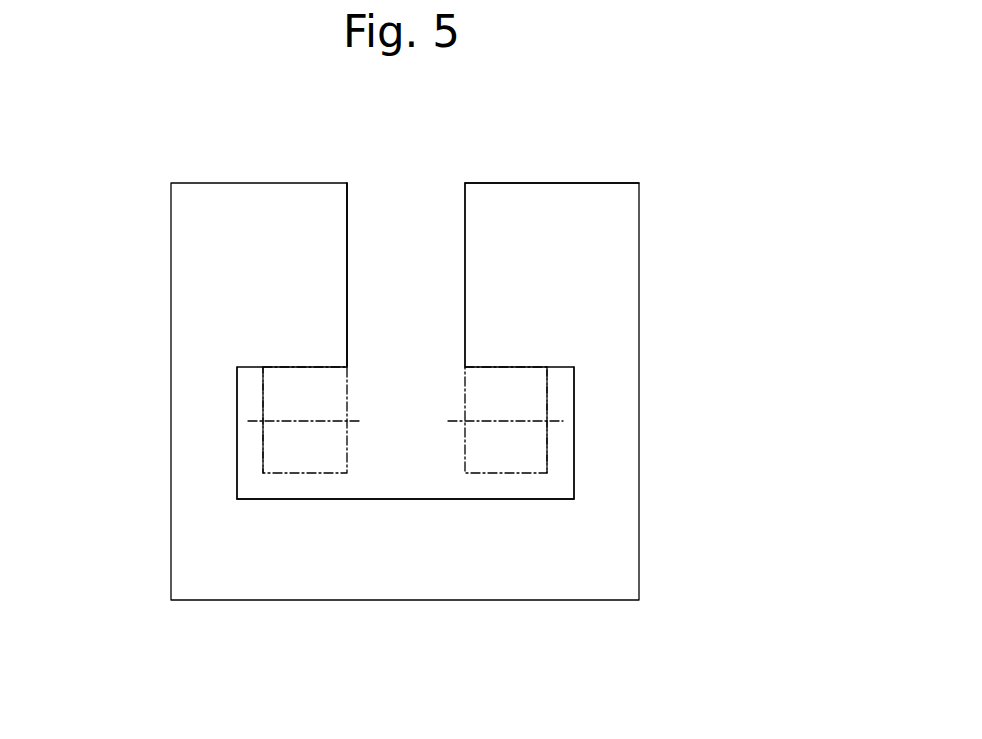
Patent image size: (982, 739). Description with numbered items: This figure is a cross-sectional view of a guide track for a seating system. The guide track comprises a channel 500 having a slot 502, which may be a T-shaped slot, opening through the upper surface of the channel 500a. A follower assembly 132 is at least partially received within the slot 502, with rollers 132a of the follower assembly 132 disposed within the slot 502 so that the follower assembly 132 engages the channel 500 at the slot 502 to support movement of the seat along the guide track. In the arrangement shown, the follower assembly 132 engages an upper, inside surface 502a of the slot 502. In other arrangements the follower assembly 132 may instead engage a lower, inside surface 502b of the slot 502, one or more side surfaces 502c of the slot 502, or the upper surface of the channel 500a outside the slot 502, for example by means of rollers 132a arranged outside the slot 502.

The channel 500 is at (610, 268).
The upper surface of the channel 500a is at (577, 183).
The slot 502 is at (424, 223).
The upper, inside surface of the slot 502a is at (533, 367).
The lower, inside surface of the slot 502b is at (453, 498).
The side surface of the slot 502c is at (347, 226).
The follower assembly 132 is at (371, 490).
The roller 132a is at (263, 465).